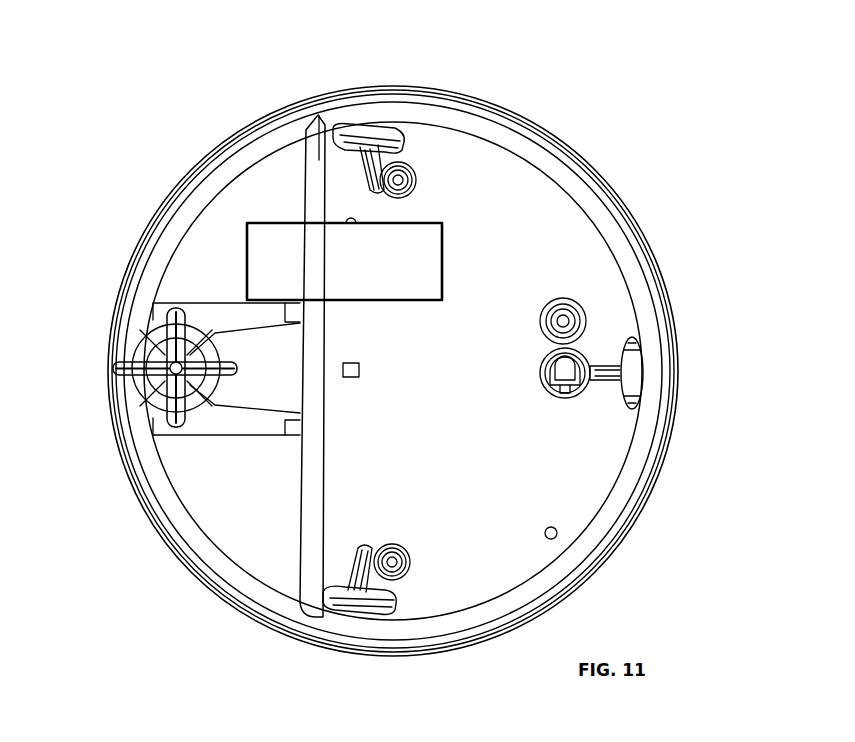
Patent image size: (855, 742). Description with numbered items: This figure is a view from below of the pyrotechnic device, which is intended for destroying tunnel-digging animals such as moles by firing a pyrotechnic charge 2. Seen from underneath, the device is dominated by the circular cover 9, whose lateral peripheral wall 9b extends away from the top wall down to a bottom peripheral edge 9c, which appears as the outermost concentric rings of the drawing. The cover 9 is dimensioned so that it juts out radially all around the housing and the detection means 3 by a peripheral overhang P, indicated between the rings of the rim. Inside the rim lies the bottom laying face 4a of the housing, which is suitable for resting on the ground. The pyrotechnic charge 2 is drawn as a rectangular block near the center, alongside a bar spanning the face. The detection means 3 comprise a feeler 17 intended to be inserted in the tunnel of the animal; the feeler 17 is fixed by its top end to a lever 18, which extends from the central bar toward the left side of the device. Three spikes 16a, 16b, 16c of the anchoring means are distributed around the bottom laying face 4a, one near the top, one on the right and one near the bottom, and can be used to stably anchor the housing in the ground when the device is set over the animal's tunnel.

The cover 9 is at (622, 192).
The lateral peripheral wall 9b is at (223, 147).
The bottom peripheral edge 9c is at (178, 188).
The peripheral overhang P is at (543, 178).
The bottom laying face 4a is at (393, 371).
The pyrotechnic charge 2 is at (218, 263).
The detection means 3 is at (165, 378).
The feeler 17 is at (153, 347).
The lever 18 is at (270, 390).
The spike 16a is at (376, 138).
The spike 16b is at (640, 358).
The spike 16c is at (352, 598).